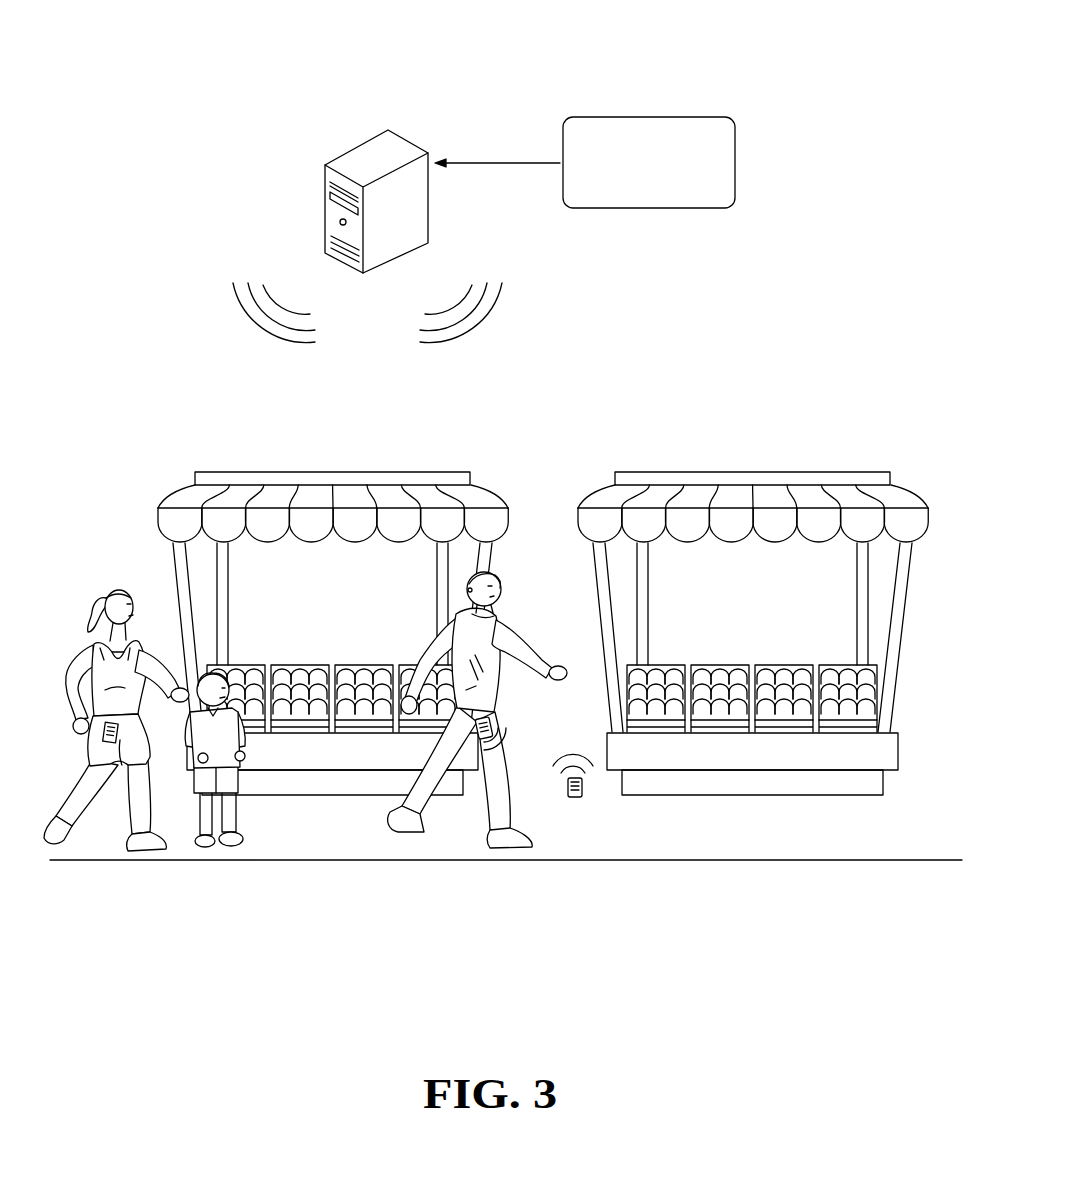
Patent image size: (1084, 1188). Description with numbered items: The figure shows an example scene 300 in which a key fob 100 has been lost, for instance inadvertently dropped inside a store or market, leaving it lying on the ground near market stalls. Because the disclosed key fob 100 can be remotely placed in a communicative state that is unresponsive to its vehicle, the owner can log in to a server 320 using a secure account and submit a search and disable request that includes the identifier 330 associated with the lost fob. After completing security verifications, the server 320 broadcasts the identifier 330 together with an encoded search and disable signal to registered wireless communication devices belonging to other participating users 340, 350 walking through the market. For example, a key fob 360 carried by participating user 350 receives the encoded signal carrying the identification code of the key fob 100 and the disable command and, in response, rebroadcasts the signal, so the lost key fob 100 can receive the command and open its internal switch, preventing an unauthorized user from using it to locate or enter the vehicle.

The key fob 100 is at (577, 797).
The scene 300 is at (497, 958).
The server 320 is at (413, 138).
The identifier 330 is at (655, 117).
The participating user 340 is at (117, 583).
The participating user 350 is at (505, 568).
The key fob 360 is at (508, 723).